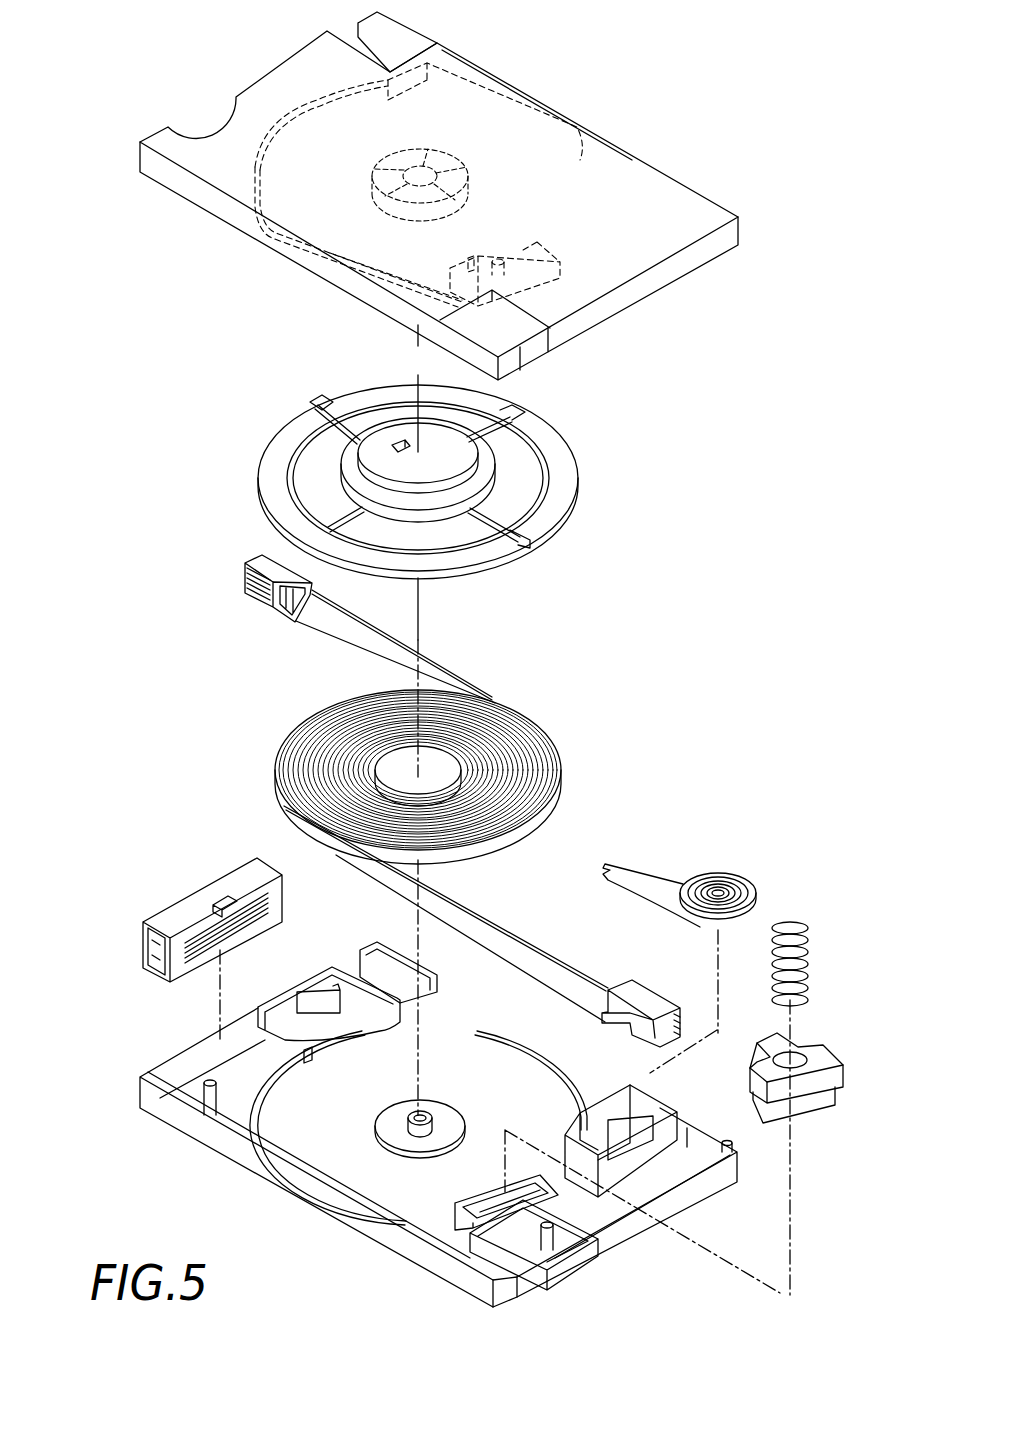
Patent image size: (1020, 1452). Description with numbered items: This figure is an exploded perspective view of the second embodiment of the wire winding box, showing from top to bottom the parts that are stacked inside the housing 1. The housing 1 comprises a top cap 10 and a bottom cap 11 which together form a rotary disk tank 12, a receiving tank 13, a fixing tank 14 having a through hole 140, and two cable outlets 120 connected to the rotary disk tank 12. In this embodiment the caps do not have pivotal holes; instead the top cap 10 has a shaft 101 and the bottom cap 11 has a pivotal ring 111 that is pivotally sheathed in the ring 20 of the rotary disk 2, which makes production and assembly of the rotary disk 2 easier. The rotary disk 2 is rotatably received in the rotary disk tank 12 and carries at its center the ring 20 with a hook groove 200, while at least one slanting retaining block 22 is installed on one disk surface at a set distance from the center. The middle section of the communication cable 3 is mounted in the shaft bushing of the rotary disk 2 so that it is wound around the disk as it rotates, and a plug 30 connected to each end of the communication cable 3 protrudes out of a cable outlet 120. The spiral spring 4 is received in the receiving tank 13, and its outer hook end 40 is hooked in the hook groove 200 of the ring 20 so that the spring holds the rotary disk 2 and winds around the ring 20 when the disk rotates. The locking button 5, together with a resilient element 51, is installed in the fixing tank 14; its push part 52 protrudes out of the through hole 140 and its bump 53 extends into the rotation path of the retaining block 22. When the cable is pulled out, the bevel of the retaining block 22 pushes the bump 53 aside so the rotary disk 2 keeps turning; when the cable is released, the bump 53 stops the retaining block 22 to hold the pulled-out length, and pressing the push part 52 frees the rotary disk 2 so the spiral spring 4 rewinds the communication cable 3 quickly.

The housing 1 is at (160, 1152).
The top cap 10 is at (439, 1099).
The bottom cap 11 is at (680, 195).
The pivotal ring 111 is at (390, 205).
The rotary disk tank 12 is at (293, 1132).
The cable outlet 120 is at (350, 962).
The receiving tank 13 is at (645, 1103).
The fixing tank 14 is at (470, 1191).
The through hole 140 is at (498, 1210).
The shaft 101 is at (407, 1130).
The rotary disk 2 is at (449, 469).
The ring 20 is at (486, 431).
The hook groove 200 is at (480, 428).
The retaining block 22 is at (515, 540).
The communication cable 3 is at (540, 762).
The plug 30 is at (263, 561).
The spiral spring 4 is at (712, 861).
The outer hook end 40 is at (605, 863).
The locking button 5 is at (817, 1058).
The resilient element 51 is at (808, 953).
The push part 52 is at (803, 1108).
The bump 53 is at (767, 1043).